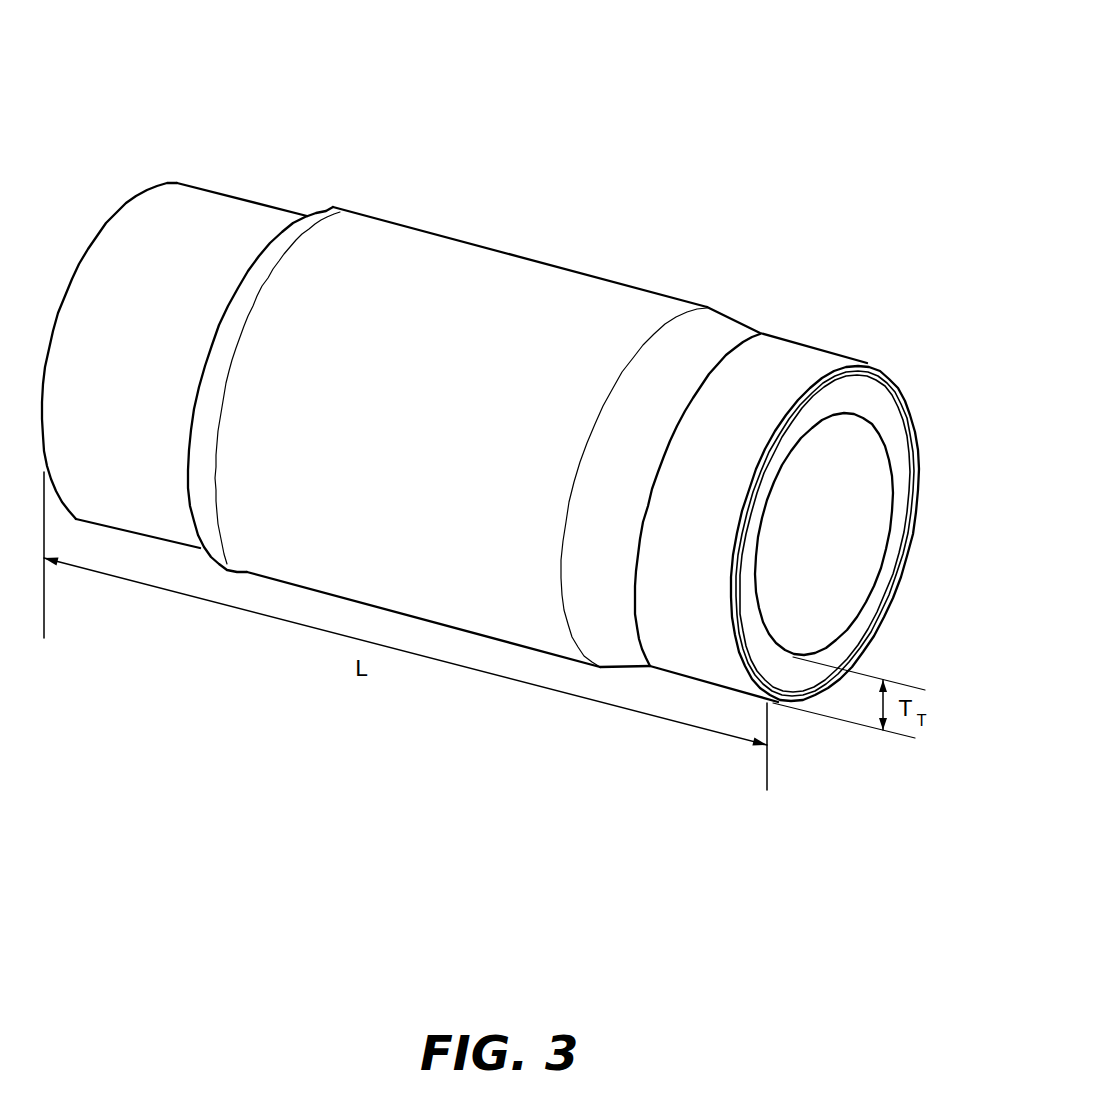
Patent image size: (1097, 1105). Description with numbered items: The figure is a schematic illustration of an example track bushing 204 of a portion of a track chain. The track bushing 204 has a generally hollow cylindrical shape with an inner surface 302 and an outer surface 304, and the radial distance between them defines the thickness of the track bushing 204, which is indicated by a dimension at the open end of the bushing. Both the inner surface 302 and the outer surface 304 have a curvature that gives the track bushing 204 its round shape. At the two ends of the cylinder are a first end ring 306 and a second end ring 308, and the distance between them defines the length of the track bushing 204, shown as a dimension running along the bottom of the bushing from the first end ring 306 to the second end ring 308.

The track bushing 204 is at (798, 71).
The inner surface 302 is at (858, 520).
The outer surface 304 is at (592, 290).
The first end ring 306 is at (157, 181).
The second end ring 308 is at (850, 390).